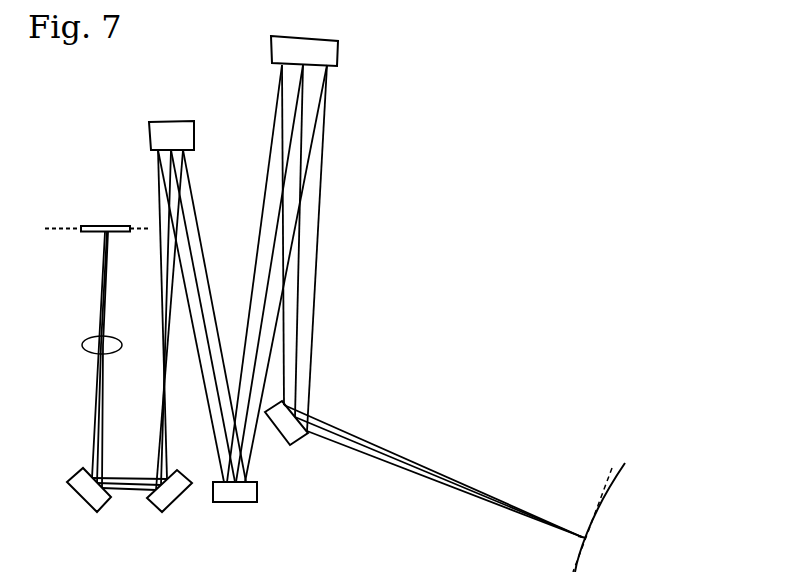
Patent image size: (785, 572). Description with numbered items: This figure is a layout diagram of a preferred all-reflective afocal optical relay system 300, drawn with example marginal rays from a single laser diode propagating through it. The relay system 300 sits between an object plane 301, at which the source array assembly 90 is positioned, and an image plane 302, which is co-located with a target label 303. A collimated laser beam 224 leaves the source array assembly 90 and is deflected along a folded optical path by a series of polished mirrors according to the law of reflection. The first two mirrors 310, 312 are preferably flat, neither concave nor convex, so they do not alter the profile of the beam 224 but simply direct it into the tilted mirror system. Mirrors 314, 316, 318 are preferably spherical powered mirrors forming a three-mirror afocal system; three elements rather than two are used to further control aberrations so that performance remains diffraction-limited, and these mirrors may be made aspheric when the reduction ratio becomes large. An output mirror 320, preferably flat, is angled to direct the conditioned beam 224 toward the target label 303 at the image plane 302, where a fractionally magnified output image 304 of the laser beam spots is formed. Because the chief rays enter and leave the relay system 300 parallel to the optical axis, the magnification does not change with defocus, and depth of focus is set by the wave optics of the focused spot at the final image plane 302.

The all-reflective afocal optical relay system 300 is at (50, 137).
The object plane 301 is at (54, 226).
The source array assembly 90 is at (99, 226).
The laser beam 224 is at (83, 345).
The first flat mirror 310 is at (83, 500).
The second flat mirror 312 is at (175, 500).
The spherical powered mirror 314 is at (172, 122).
The spherical powered mirror 316 is at (235, 503).
The spherical powered mirror 318 is at (310, 37).
The output mirror 320 is at (290, 447).
The image plane 302 is at (598, 492).
The target label 303 is at (582, 537).
The output image 304 is at (579, 540).